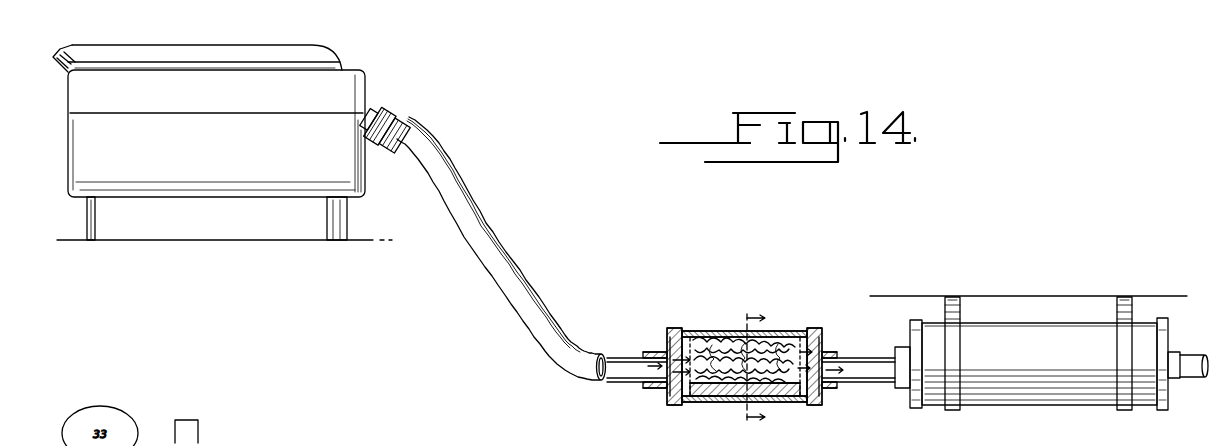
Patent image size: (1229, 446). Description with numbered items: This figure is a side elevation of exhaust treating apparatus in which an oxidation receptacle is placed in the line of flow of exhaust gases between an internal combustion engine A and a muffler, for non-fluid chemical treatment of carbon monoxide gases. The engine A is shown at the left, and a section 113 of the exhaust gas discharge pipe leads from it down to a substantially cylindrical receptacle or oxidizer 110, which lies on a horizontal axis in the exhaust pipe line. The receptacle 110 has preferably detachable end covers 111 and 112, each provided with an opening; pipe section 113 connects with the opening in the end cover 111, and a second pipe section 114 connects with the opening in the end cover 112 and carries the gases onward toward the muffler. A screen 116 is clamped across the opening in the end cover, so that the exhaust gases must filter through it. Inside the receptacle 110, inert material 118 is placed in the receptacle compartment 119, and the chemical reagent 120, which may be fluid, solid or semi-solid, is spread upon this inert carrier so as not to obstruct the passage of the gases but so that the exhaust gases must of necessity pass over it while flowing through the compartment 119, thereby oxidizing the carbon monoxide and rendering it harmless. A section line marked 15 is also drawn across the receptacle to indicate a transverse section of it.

The internal combustion engine A is at (342, 174).
The exhaust gas discharge pipe section 113 is at (543, 311).
The receptacle or oxidizer 110 is at (713, 329).
The end cover 111 is at (668, 392).
The end cover 112 is at (821, 333).
The screen 116 is at (668, 380).
The exhaust gas discharge pipe section 114 is at (879, 370).
The inert material 118 is at (714, 392).
The receptacle compartment 119 is at (777, 334).
The chemical reagent 120 is at (785, 390).
The section line 15- 15 is at (767, 371).